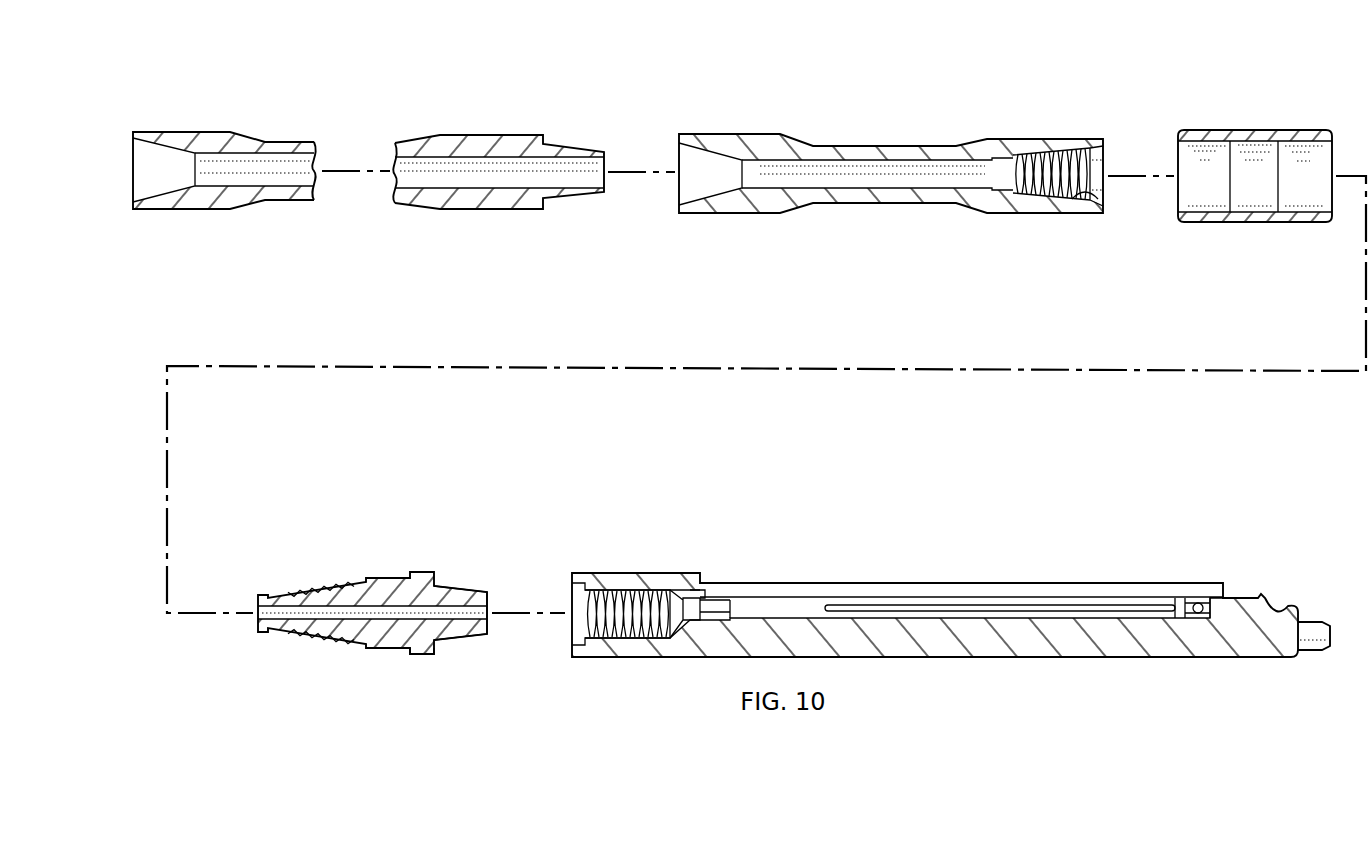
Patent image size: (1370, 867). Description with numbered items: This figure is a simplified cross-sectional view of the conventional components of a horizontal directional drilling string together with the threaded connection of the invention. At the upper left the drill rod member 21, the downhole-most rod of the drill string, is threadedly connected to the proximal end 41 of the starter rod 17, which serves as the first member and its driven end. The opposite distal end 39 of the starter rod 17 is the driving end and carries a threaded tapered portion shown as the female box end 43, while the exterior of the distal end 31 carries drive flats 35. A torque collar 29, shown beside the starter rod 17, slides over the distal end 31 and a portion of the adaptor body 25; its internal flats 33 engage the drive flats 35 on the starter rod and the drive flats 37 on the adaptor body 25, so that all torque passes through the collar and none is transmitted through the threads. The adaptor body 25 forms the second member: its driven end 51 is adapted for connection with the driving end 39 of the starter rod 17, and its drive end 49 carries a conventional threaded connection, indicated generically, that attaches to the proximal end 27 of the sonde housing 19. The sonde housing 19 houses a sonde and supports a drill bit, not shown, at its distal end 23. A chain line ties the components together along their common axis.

The starter rod 17 is at (916, 177).
The sonde housing 19 is at (962, 620).
The drill rod member 21 is at (476, 140).
The distal end 23 is at (1318, 661).
The adaptor body 25 is at (377, 607).
The proximal end 27 is at (628, 577).
The torque collar 29 is at (1246, 175).
The distal end 31 is at (1116, 132).
The internal flats 33 is at (1205, 212).
The drive flats 35 is at (1052, 138).
The drive flats 37 is at (390, 650).
The distal end 39 is at (1080, 227).
The proximal end 41 is at (717, 226).
The box end 43 is at (1098, 191).
The drive end 49 is at (464, 573).
The driven end 51 is at (298, 577).